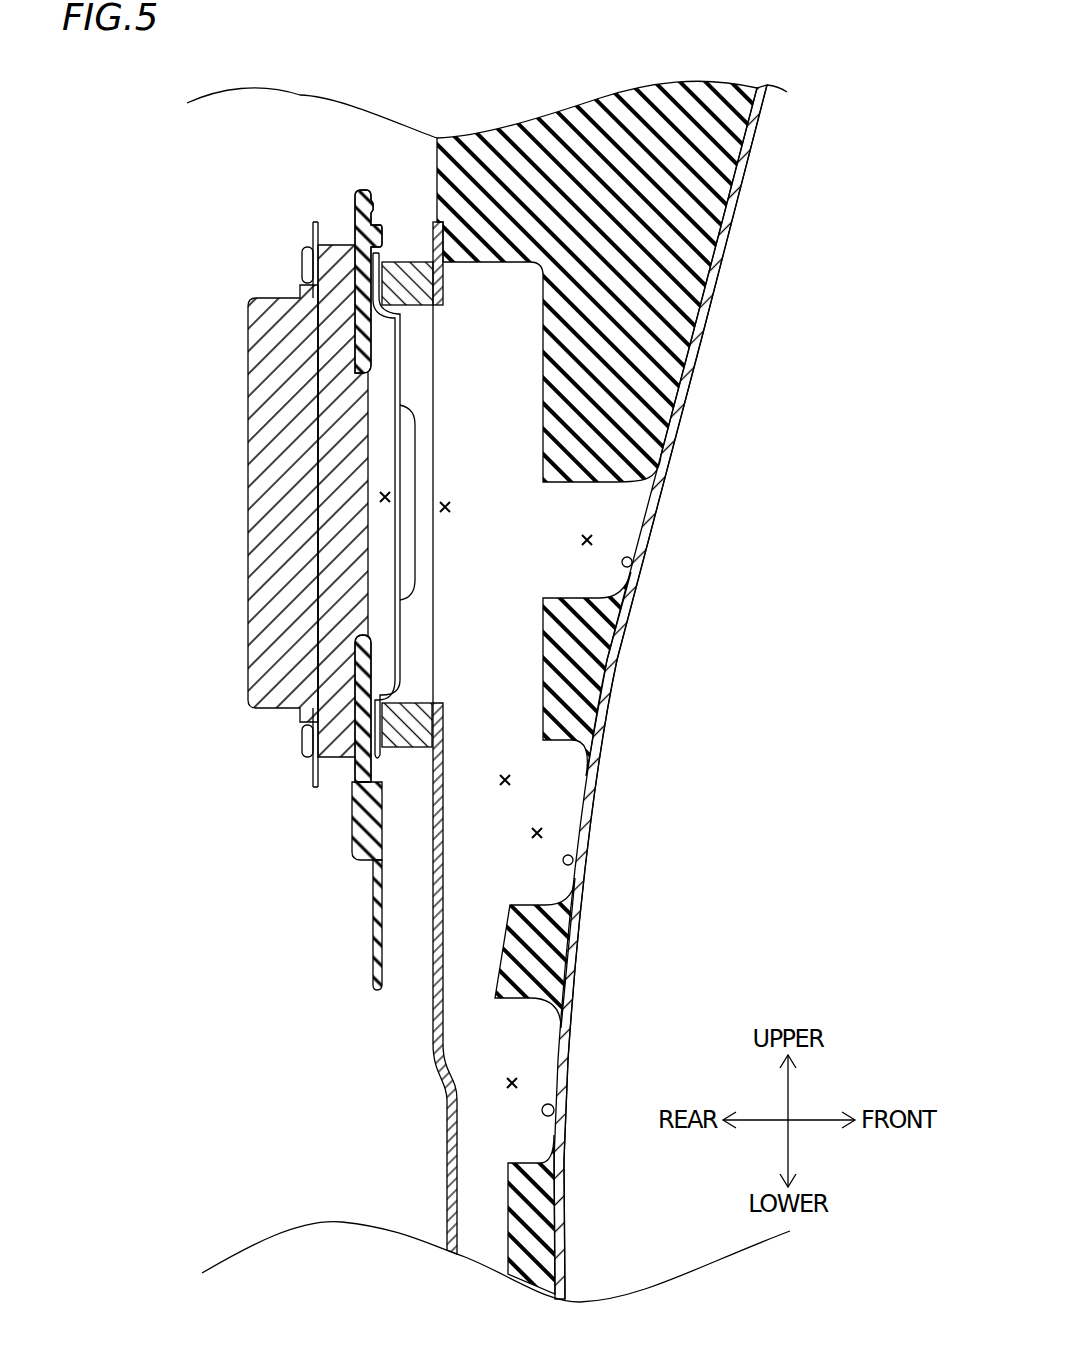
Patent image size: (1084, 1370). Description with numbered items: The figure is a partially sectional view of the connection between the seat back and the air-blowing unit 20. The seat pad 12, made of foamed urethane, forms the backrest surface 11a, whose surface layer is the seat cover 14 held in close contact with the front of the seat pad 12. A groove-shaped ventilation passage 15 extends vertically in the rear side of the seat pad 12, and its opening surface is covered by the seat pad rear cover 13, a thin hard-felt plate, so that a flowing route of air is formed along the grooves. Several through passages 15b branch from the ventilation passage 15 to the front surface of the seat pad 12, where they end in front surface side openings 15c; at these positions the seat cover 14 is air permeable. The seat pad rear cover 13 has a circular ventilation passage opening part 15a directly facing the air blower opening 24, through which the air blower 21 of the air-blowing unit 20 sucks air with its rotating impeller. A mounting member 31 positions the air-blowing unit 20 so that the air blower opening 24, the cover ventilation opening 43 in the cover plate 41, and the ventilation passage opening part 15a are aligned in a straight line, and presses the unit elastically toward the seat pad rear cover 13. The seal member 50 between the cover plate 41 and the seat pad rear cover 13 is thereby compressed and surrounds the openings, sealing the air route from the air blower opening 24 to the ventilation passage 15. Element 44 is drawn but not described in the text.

The backrest surface 11a is at (746, 193).
The seat pad 12 is at (620, 96).
The seat pad rear cover 13 is at (433, 222).
The seat cover 14 is at (715, 288).
The ventilation passage 15 is at (510, 779).
The ventilation passage opening part 15a is at (450, 507).
The through passages 15b is at (592, 540).
The front surface side openings 15c is at (631, 566).
The air-blowing unit 20 is at (285, 590).
The air blower 21 is at (280, 297).
The air blower opening 24 is at (379, 519).
The mounting member 31 is at (373, 922).
The cover plate 41 is at (397, 393).
The cover ventilation opening 43 is at (382, 497).
The cover plate 44 is at (405, 578).
The seal member 50 is at (413, 262).